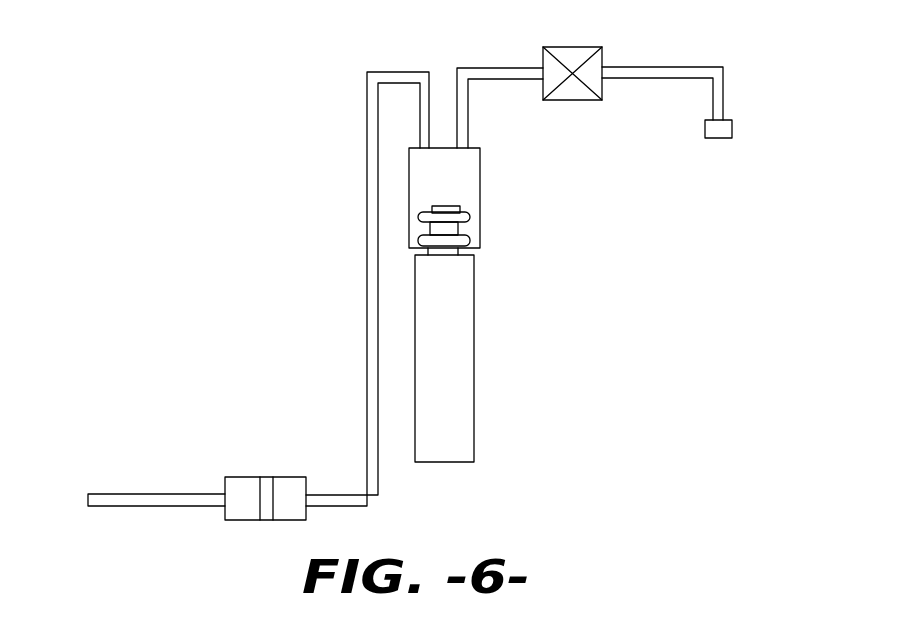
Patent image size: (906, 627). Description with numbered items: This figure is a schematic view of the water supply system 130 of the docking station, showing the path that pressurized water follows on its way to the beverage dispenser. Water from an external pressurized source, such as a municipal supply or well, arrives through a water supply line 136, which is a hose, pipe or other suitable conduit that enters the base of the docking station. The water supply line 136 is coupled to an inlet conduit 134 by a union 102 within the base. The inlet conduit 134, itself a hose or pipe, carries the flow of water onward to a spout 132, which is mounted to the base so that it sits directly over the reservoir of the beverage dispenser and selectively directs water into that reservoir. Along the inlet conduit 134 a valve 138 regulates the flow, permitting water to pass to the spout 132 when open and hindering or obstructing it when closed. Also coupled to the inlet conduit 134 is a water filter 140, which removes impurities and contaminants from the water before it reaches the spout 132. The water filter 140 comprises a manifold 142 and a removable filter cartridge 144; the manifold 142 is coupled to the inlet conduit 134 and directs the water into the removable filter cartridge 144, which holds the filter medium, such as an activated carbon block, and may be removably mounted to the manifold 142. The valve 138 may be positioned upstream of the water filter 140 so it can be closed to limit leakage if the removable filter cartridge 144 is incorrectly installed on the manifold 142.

The water supply system 130 is at (210, 147).
The union 102 is at (240, 483).
The spout 132 is at (732, 129).
The inlet conduit 134 is at (367, 167).
The water supply line 136 is at (127, 494).
The valve 138 is at (582, 47).
The water filter 140 is at (508, 305).
The manifold 142 is at (460, 170).
The removable filter cartridge 144 is at (458, 347).